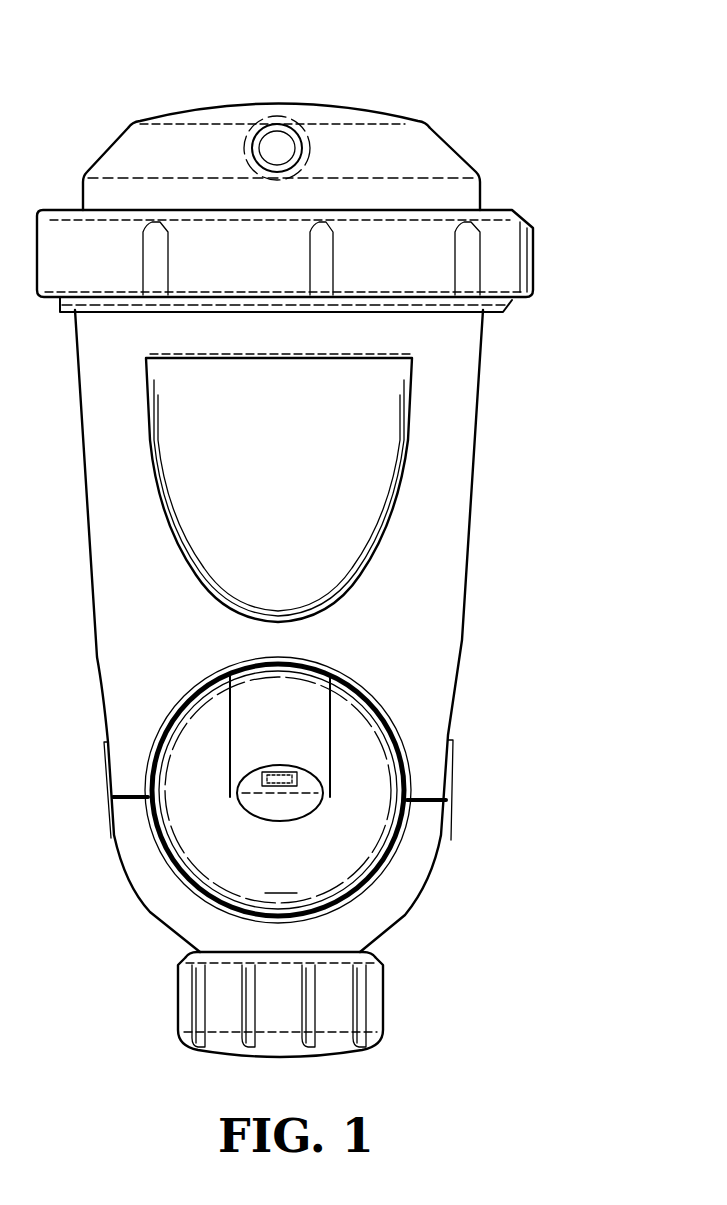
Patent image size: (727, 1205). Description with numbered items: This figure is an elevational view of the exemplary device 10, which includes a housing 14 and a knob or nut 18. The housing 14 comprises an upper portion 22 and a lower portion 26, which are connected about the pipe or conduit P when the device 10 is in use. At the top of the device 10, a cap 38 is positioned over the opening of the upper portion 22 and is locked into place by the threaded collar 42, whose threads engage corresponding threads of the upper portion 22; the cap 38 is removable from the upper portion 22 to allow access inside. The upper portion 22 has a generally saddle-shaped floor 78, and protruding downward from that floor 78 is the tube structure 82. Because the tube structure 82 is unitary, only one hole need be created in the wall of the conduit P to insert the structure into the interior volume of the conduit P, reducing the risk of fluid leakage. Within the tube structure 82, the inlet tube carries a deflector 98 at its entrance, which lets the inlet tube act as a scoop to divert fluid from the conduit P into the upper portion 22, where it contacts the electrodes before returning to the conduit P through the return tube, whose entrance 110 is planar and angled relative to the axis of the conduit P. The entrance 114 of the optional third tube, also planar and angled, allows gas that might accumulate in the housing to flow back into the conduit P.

The device 10 is at (506, 98).
The housing 14 is at (565, 431).
The knob or nut 18 is at (388, 1017).
The upper portion 22 is at (457, 533).
The lower portion 26 is at (421, 898).
The cap 38 is at (343, 104).
The collar 42 is at (512, 244).
The floor 78 is at (397, 735).
The tube structure 82 is at (330, 765).
The deflector 98 is at (303, 818).
The entrance of return tube 110 is at (240, 797).
The entrance of third tube 114 is at (252, 786).
The pipe or conduit P is at (404, 836).